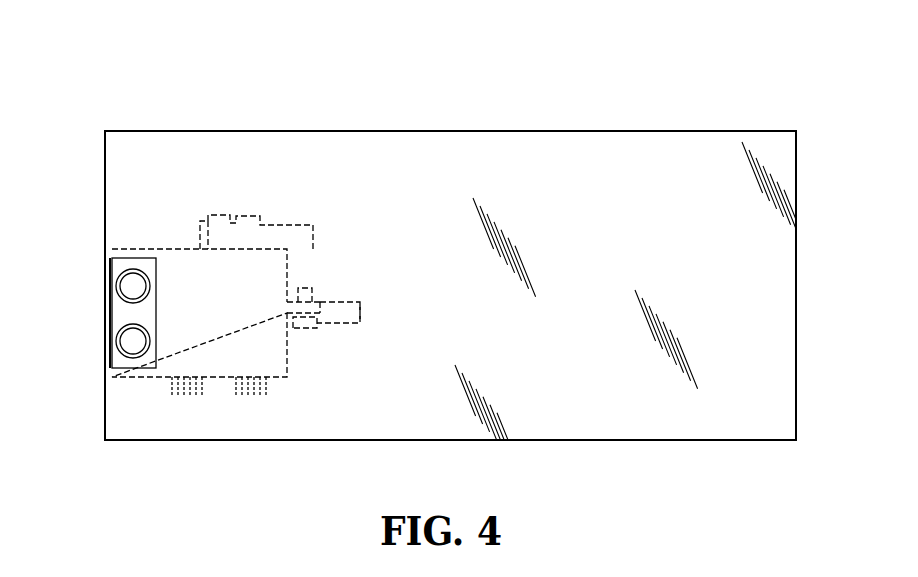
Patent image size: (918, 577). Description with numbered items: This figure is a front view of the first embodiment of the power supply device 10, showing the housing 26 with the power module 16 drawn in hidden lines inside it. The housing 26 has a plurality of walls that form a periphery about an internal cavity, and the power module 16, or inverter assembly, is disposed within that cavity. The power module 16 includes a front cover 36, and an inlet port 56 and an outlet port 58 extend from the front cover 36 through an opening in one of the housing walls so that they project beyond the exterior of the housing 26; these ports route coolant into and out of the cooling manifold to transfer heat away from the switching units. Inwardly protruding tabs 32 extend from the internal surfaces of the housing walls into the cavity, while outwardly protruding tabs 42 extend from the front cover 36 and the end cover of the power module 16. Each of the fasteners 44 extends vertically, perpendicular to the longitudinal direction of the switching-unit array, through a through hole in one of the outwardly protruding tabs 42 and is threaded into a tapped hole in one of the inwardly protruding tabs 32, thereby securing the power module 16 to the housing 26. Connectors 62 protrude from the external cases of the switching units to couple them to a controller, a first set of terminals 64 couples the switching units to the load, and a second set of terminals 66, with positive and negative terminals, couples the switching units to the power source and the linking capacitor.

The power supply device 10 is at (182, 83).
The power module 16 is at (380, 270).
The housing 26 is at (798, 287).
The inwardly protruding tabs 32 is at (313, 293).
The front cover 36 is at (173, 247).
The outwardly protruding tabs 42 is at (323, 313).
The fasteners 44 is at (302, 328).
The inlet port 56 is at (145, 285).
The outlet port 58 is at (145, 341).
The connectors 62 is at (193, 397).
The first set of terminals 64 is at (363, 308).
The second set of terminals 66 is at (297, 223).